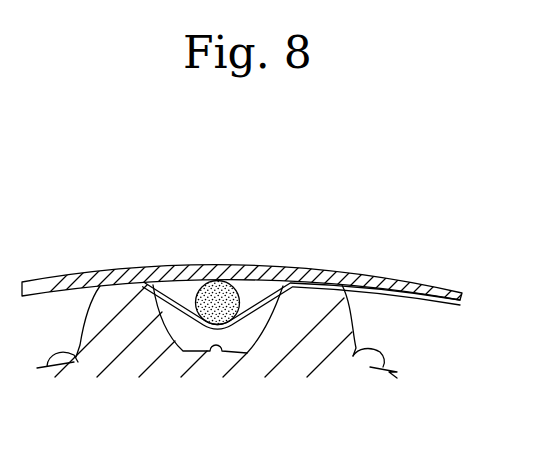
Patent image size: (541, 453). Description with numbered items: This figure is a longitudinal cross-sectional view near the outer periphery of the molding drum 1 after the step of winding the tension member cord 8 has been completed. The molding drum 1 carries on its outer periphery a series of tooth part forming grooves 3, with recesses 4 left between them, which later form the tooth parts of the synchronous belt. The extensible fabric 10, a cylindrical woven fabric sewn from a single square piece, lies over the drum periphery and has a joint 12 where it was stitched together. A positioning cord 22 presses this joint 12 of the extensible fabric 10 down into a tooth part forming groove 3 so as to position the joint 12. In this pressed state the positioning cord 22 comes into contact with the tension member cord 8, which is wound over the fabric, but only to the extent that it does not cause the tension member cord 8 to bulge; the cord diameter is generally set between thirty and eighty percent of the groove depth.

The molding drum 1 is at (362, 312).
The tooth part forming groove 3 is at (76, 357).
The recess 4 is at (120, 282).
The tension member cord 8 is at (433, 284).
The extensible fabric 10 is at (273, 283).
The joint 12 is at (248, 353).
The positioning cord 22 is at (238, 288).